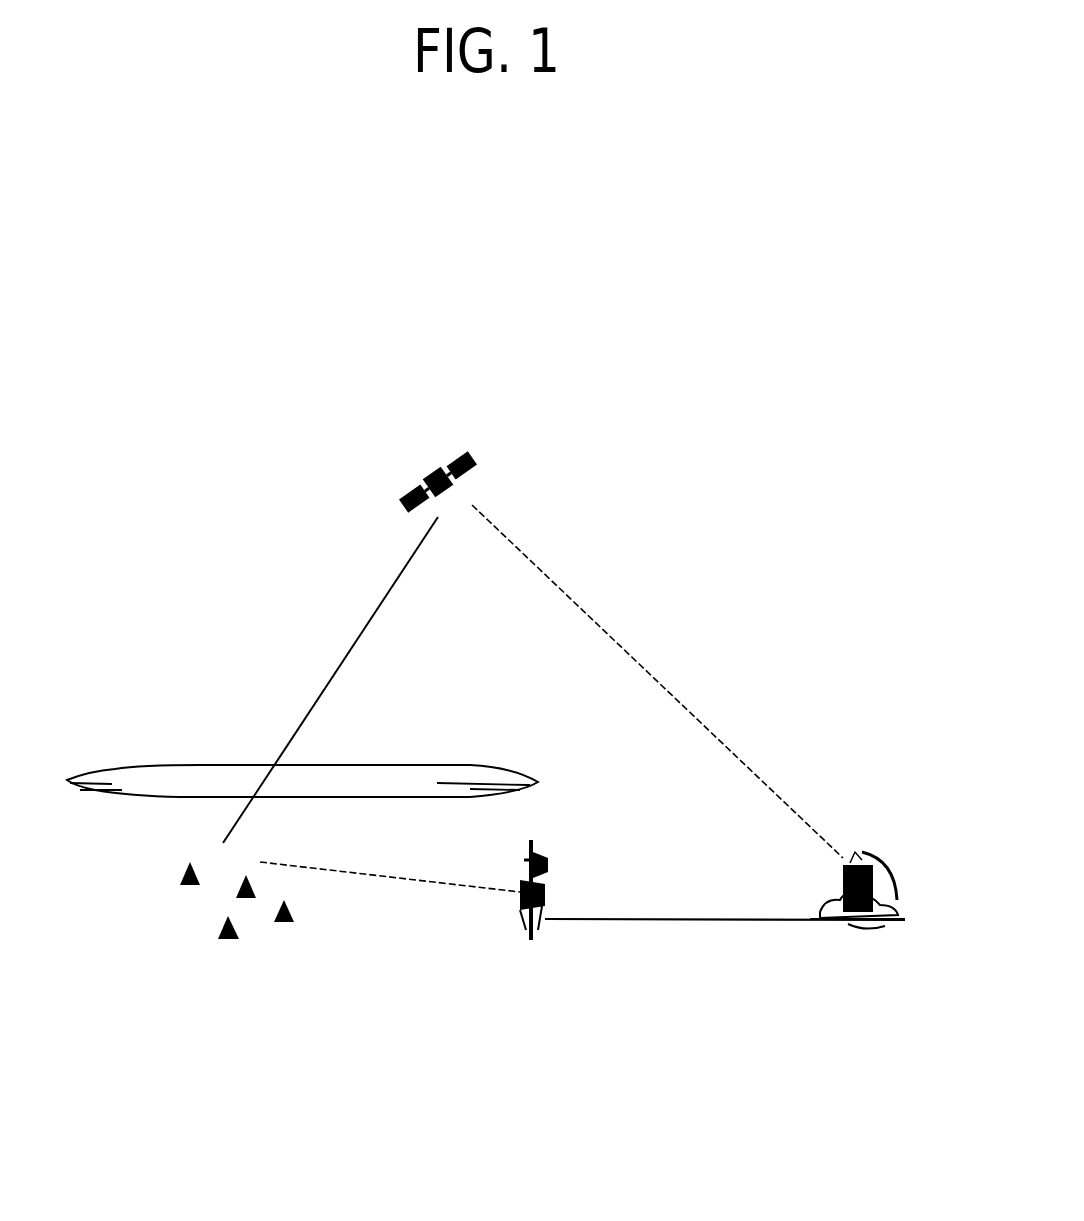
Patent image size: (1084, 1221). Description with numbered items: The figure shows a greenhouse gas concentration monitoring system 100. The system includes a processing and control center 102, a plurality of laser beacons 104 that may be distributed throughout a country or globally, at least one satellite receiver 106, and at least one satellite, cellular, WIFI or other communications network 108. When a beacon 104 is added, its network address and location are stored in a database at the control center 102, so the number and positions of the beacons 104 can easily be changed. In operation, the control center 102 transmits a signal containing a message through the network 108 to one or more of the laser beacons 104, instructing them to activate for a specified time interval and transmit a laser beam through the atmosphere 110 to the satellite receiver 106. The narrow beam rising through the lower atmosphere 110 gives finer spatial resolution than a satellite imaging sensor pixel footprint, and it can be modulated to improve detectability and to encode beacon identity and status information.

The greenhouse gas concentration monitoring system 100 is at (784, 231).
The processing and control center 102 is at (836, 948).
The laser beacons 104 is at (195, 948).
The satellite receiver 106 is at (478, 437).
The communications network 108 is at (518, 948).
The atmosphere 110 is at (195, 740).